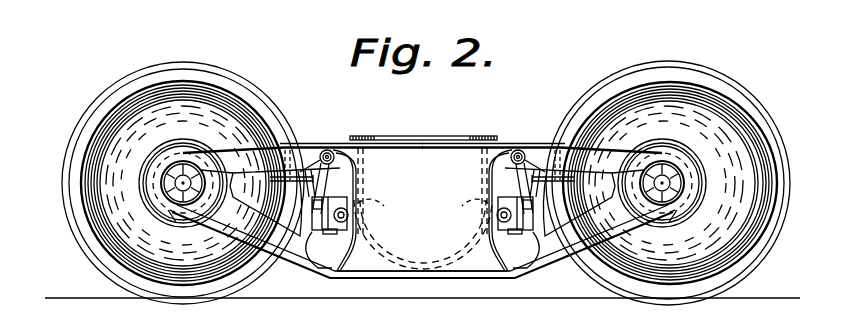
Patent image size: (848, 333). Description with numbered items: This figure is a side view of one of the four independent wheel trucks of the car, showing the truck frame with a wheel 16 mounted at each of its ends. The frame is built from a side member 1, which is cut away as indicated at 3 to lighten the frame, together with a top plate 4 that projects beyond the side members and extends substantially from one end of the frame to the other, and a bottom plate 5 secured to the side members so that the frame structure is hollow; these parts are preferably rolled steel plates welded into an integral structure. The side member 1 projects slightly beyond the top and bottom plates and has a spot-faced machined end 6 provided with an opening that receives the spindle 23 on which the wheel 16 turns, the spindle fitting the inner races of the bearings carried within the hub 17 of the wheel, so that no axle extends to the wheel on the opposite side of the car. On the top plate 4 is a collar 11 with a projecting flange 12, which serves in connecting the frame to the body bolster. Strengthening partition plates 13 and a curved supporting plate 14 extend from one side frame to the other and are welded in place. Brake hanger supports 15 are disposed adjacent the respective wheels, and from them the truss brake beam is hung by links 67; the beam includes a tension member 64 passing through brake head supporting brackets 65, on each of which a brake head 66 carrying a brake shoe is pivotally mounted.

The side member 1 is at (385, 257).
The cut-away portion 3 is at (252, 158).
The top plate 4 is at (317, 148).
The bottom plate 5 is at (465, 272).
The spot-faced machined end 6 is at (167, 173).
The collar 11 is at (383, 141).
The projecting flange 12 is at (443, 141).
The strengthening partition plate 13 is at (423, 212).
The curved supporting plate 14 is at (443, 248).
The brake hanger support 15 is at (307, 147).
The wheel 16 is at (143, 103).
The hub 17 is at (173, 153).
The spindle 23 is at (682, 207).
The tension member 64 is at (363, 233).
The brake head supporting bracket 65 is at (338, 233).
The brake head 66 is at (290, 283).
The link 67 is at (326, 180).